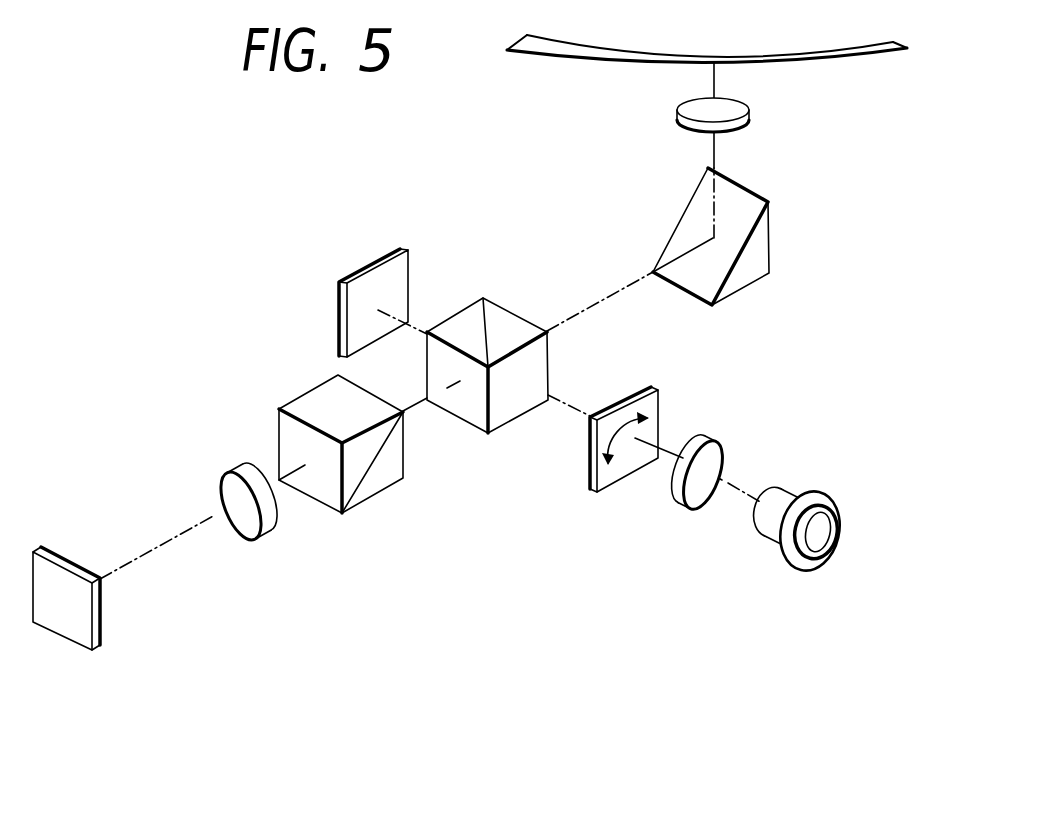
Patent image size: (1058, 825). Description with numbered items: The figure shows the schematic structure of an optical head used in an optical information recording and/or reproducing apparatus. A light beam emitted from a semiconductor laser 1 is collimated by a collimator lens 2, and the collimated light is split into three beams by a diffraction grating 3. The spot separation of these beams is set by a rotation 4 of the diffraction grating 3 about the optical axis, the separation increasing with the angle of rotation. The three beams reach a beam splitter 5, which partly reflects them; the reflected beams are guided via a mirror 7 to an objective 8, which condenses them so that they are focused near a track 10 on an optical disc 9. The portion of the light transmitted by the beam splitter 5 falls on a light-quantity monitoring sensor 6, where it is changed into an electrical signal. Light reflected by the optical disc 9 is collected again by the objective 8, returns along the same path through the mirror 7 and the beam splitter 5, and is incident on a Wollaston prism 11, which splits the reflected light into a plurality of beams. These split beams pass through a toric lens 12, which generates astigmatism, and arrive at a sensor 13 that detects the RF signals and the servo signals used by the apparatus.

The semiconductor laser 1 is at (787, 488).
The collimator lens 2 is at (712, 438).
The diffraction grating 3 is at (658, 413).
The rotation 4 is at (623, 477).
The beam splitter 5 is at (548, 357).
The light-quantity monitoring sensor 6 is at (408, 270).
The mirror 7 is at (770, 255).
The objective 8 is at (748, 113).
The optical disc 9 is at (707, 56).
The track 10 is at (637, 55).
The Wollaston prism 11 is at (383, 492).
The toric lens 12 is at (233, 465).
The sensor 13 is at (102, 632).